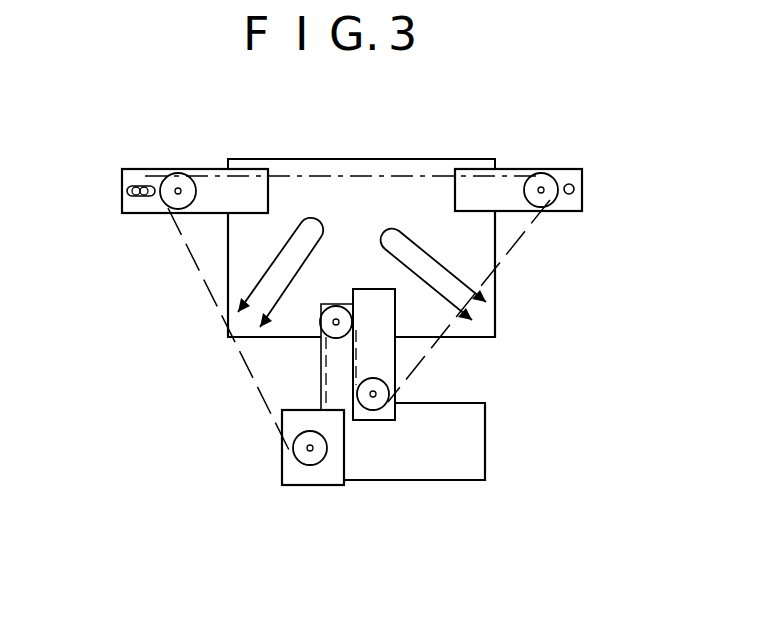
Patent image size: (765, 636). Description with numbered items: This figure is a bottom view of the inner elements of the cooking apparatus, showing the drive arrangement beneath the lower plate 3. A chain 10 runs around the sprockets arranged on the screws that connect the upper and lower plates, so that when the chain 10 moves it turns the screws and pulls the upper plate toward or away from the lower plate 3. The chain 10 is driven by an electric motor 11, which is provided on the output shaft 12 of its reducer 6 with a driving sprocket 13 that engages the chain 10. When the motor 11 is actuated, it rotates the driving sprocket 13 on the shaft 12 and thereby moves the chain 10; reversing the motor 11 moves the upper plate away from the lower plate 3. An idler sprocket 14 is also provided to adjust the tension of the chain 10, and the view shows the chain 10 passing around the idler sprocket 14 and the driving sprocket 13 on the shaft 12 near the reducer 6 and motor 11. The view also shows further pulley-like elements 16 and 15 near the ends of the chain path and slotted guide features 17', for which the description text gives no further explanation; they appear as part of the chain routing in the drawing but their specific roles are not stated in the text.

The lower plate 3 is at (364, 165).
The chain 10 is at (431, 170).
The guide pulley 16 is at (122, 193).
The guide pulley 15 is at (584, 188).
The idler sprocket 14 is at (328, 322).
The guide slots 17' is at (307, 272).
The driving sprocket 13 is at (293, 448).
The output shaft 12 is at (312, 450).
The reducer 6 is at (304, 478).
The electric motor 11 is at (423, 465).